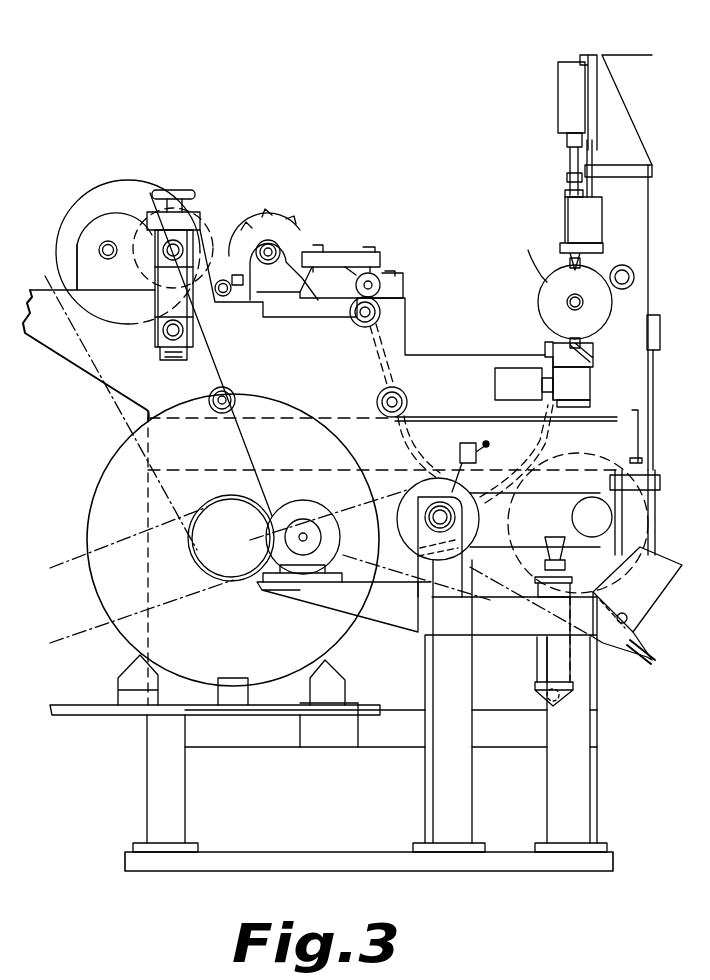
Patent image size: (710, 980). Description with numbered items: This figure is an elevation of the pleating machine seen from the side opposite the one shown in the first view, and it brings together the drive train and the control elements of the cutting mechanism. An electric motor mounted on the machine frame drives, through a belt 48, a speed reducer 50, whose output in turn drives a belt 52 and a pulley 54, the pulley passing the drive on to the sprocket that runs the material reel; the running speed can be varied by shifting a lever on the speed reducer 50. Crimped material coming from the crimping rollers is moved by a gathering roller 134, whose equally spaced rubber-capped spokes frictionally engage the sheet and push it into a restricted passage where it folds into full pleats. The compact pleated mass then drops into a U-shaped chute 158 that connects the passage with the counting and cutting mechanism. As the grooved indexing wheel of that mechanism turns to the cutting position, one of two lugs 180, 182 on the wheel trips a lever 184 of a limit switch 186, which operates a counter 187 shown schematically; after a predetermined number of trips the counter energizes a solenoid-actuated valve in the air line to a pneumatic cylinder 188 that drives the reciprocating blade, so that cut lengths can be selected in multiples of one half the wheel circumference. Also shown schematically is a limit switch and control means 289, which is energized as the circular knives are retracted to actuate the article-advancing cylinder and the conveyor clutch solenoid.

The belt 48 is at (68, 640).
The speed reducer 50 is at (94, 494).
The belt 52 is at (122, 397).
The pulley 54 is at (97, 190).
The gathering roller 134 is at (290, 228).
The U-shaped chute 158 is at (520, 460).
The lug 180 is at (553, 330).
The lug 182 is at (548, 275).
The lever 184 is at (592, 344).
The limit switch 186 is at (577, 388).
The counter 187 is at (497, 387).
The pneumatic cylinder 188 is at (566, 101).
The limit switch and control means 289 is at (460, 453).